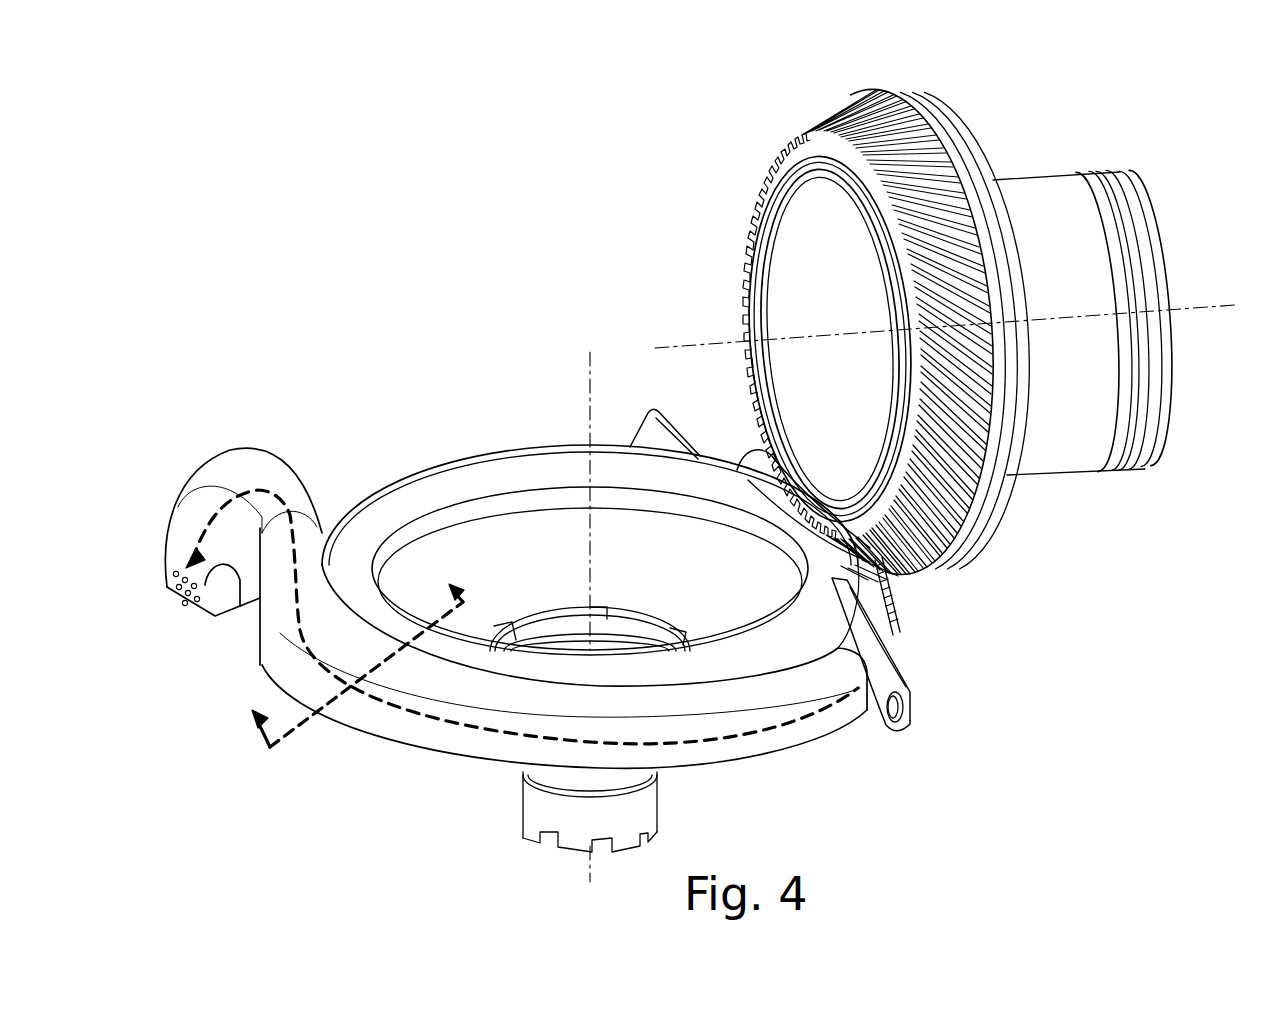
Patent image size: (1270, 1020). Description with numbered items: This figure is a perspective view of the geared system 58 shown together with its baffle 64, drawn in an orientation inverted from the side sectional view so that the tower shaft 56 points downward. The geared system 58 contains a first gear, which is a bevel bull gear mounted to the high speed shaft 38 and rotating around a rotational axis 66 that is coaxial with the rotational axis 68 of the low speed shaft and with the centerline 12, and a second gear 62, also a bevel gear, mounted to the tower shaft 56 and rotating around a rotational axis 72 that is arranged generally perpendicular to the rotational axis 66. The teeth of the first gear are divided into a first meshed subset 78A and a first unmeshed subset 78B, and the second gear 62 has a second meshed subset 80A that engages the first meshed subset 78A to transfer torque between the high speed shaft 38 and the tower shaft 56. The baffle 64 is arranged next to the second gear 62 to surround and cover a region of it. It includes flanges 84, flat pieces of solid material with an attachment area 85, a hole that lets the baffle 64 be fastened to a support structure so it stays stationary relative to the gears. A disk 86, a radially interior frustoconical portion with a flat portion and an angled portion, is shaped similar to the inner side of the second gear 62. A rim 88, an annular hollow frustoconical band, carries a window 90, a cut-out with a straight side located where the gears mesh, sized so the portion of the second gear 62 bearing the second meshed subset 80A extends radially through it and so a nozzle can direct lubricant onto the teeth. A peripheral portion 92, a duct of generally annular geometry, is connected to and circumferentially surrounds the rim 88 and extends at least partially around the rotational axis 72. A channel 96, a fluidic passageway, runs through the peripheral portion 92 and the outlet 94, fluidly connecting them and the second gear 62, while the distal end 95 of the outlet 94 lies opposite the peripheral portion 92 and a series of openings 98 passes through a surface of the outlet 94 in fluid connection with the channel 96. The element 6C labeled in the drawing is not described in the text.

The gear teeth end faces 6C is at (816, 110).
The centerline 12 is at (927, 303).
The high speed shaft 38 is at (1048, 202).
The tower shaft 56 is at (520, 797).
The geared system 58 is at (417, 126).
The second gear 62 is at (882, 597).
The baffle 64 is at (675, 438).
The rotational axis 66 is at (830, 339).
The rotational axis 68 is at (945, 326).
The rotational axis 72 is at (540, 617).
The first meshed subset 78A is at (870, 566).
The first unmeshed subset 78B is at (920, 135).
The second meshed subset 80A is at (893, 594).
The flanges 84 is at (838, 579).
The attachment area 85 is at (904, 705).
The disk 86 is at (418, 505).
The rim 88 is at (792, 638).
The window 90 is at (822, 480).
The peripheral portion 92 is at (492, 692).
The outlet 94 is at (218, 544).
The distal end 95 is at (212, 620).
The channel 96 is at (265, 495).
The series of openings 98 is at (158, 571).